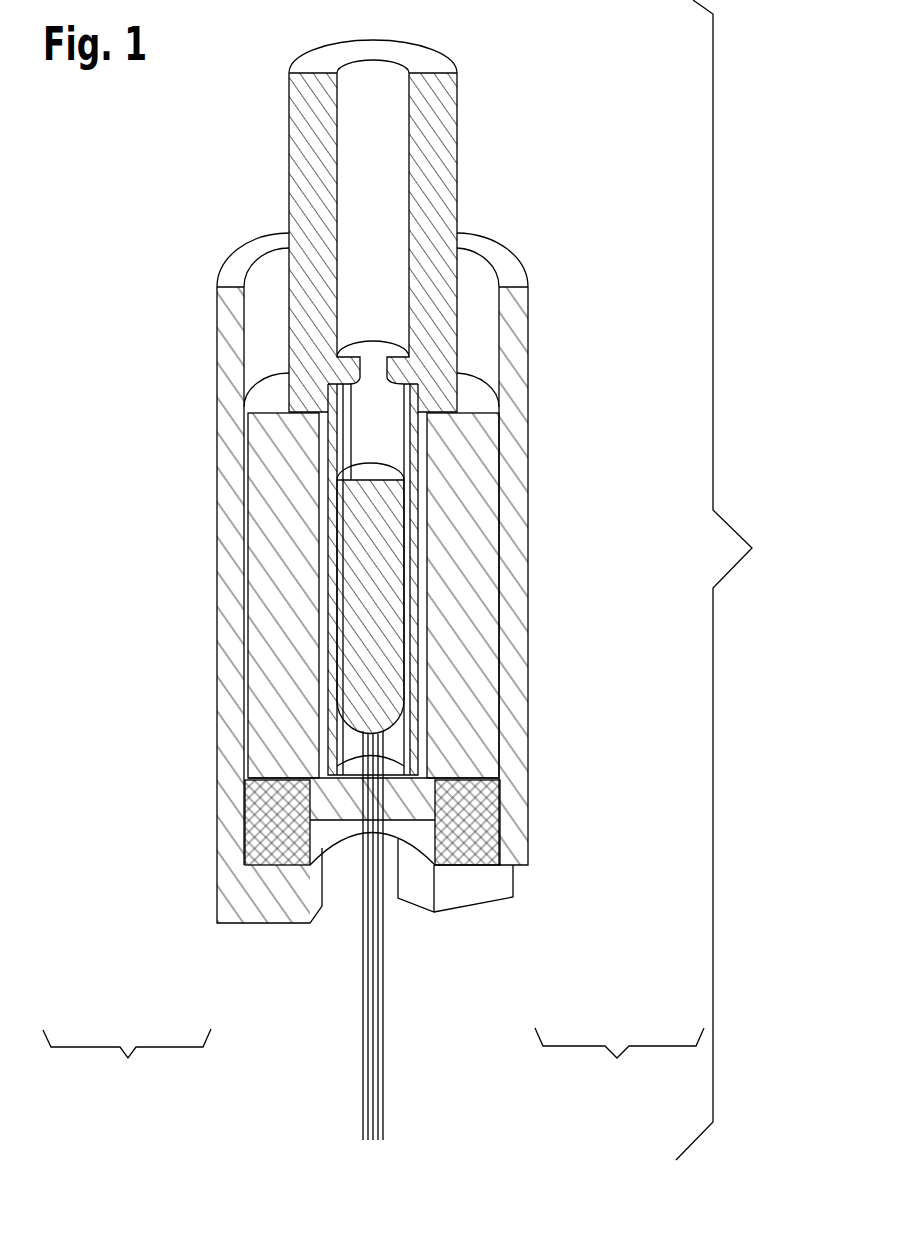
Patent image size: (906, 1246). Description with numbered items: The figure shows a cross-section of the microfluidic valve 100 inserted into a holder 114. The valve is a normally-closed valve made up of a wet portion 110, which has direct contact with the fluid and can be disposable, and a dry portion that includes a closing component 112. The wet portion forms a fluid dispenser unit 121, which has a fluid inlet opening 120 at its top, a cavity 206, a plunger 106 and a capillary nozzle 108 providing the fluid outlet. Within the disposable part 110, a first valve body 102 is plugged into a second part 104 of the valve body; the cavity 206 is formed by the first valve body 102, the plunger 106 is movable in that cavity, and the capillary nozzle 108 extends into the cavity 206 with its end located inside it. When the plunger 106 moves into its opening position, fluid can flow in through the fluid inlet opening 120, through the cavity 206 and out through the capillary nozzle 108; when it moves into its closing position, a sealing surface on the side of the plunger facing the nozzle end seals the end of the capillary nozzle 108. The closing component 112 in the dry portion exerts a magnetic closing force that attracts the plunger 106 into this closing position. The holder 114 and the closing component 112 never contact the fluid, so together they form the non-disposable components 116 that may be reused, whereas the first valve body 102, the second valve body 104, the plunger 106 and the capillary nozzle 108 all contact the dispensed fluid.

The microfluidic valve 100 is at (420, 580).
The first valve body 102 is at (314, 226).
The second part of the valve body 104 is at (282, 525).
The plunger 106 is at (363, 673).
The capillary nozzle 108 is at (363, 985).
The wet portion 110 is at (127, 1061).
The closing component 112 is at (477, 827).
The holder 114 is at (517, 525).
The non-disposable components 116 is at (619, 1061).
The fluid inlet opening 120 is at (370, 73).
The fluid dispenser unit 121 is at (737, 580).
The cavity 206 is at (363, 438).